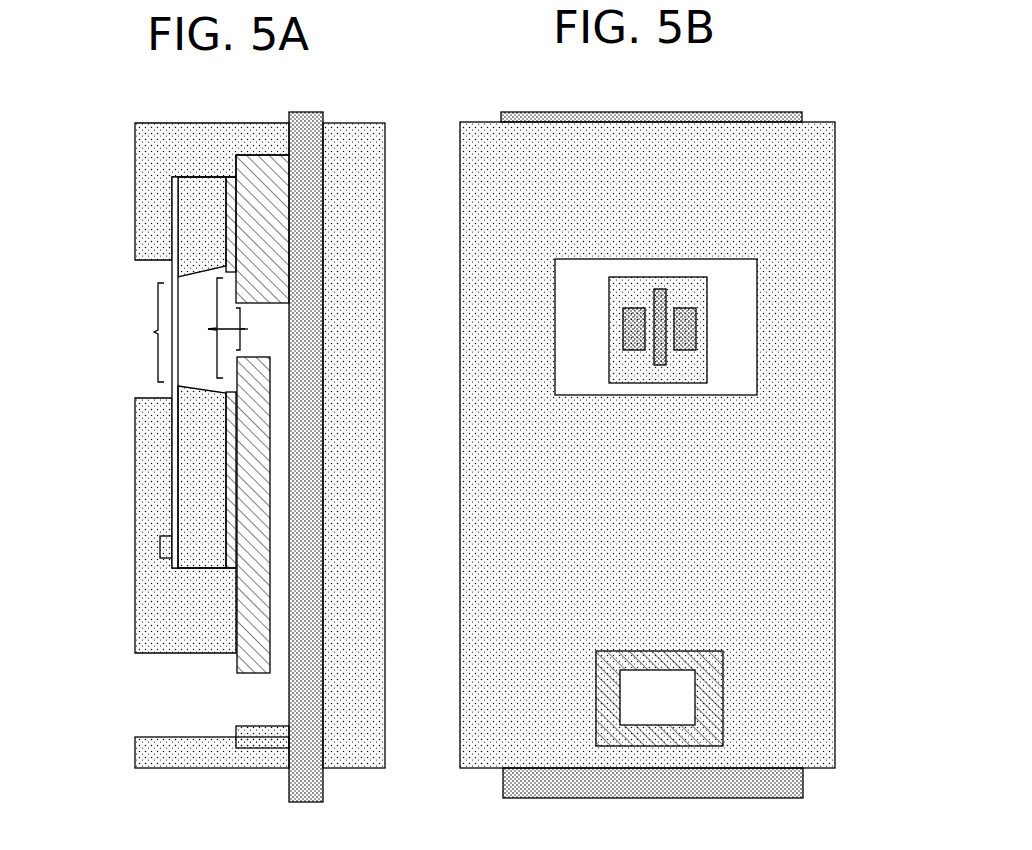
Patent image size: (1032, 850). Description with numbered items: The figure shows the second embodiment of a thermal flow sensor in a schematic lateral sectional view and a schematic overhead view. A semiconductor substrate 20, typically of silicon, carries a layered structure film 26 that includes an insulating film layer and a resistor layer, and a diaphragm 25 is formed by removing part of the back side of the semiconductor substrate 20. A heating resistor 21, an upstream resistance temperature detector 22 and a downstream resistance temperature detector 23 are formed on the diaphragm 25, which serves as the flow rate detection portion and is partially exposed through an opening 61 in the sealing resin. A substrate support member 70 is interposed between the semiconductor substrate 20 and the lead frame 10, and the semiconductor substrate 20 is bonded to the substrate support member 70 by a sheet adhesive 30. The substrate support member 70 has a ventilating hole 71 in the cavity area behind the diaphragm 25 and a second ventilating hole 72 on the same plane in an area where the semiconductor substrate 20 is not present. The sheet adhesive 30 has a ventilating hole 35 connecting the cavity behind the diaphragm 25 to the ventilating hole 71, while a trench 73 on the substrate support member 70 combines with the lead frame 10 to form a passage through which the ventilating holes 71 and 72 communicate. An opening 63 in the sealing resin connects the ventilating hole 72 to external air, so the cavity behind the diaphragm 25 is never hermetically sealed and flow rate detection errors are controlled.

In FIG. 5A, the lead frame 10 is at (310, 130).
In FIG. 5A, the semiconductor substrate 20 is at (197, 473).
In FIG. 5B, the heating resistor 21 is at (655, 294).
In FIG. 5B, the upstream resistance temperature detector 22 is at (632, 319).
In FIG. 5B, the downstream resistance temperature detector 23 is at (692, 318).
In FIG. 5A, the diaphragm 25 is at (158, 331).
In FIG. 5A, the layered structure film 26 is at (173, 197).
In FIG. 5A, the sheet adhesive 30 is at (232, 230).
In FIG. 5A, the ventilating hole 35 is at (207, 332).
In FIG. 5A, the opening 61 is at (135, 384).
In FIG. 5B, the opening 61 is at (745, 333).
In FIG. 5A, the opening 63 is at (143, 712).
In FIG. 5B, the opening 63 is at (698, 664).
In FIG. 5A, the substrate support member 70 is at (268, 170).
In FIG. 5A, the ventilating hole 71 is at (245, 329).
In FIG. 5A, the ventilating hole 72 is at (262, 703).
In FIG. 5B, the ventilating hole 72 is at (652, 694).
In FIG. 5A, the trench 73 is at (275, 510).